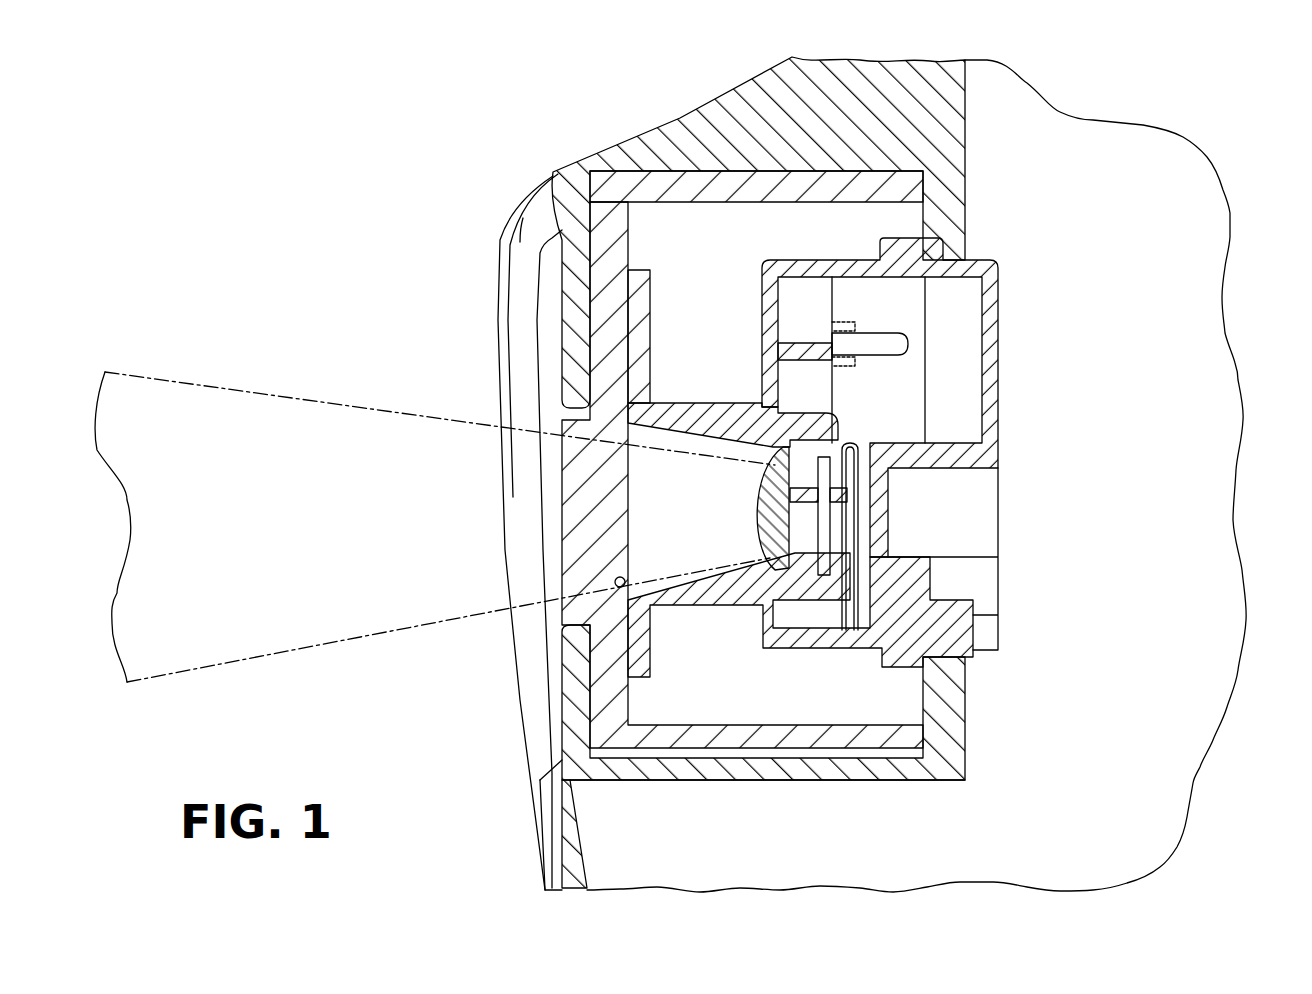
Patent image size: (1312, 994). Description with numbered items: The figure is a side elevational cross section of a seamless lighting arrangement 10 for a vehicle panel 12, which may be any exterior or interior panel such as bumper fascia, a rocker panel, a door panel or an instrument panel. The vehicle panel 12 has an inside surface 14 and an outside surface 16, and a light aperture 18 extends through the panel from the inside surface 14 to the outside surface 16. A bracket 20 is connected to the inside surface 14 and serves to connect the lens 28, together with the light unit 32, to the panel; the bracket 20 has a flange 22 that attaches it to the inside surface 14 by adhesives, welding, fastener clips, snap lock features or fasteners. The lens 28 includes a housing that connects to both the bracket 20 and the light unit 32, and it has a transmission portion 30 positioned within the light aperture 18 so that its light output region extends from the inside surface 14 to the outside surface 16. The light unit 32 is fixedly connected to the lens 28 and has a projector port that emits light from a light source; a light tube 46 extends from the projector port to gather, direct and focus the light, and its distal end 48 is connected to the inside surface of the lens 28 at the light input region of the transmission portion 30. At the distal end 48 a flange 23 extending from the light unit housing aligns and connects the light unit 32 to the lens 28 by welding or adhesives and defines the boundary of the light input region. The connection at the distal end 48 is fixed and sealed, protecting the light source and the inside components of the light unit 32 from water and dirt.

The seamless lighting arrangement 10 is at (358, 184).
The vehicle panel 12 is at (718, 120).
The inside surface 14 is at (562, 817).
The outside surface 16 is at (518, 205).
The light aperture 18 is at (548, 416).
The bracket 20 is at (692, 783).
The flange 22 is at (580, 860).
The flange 23 is at (652, 300).
The lens 28 is at (905, 186).
The transmission portion 30 is at (600, 420).
The light unit 32 is at (1180, 242).
The light tube 46 is at (707, 606).
The distal end 48 is at (625, 579).